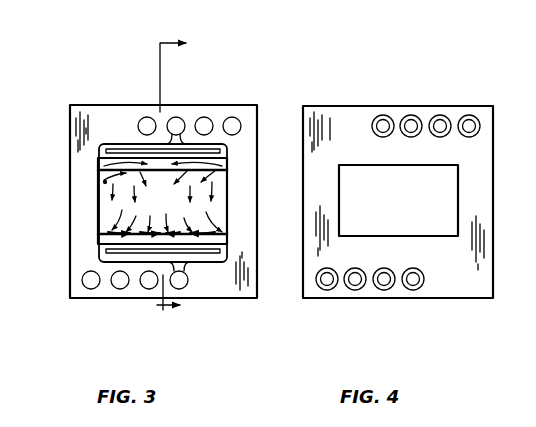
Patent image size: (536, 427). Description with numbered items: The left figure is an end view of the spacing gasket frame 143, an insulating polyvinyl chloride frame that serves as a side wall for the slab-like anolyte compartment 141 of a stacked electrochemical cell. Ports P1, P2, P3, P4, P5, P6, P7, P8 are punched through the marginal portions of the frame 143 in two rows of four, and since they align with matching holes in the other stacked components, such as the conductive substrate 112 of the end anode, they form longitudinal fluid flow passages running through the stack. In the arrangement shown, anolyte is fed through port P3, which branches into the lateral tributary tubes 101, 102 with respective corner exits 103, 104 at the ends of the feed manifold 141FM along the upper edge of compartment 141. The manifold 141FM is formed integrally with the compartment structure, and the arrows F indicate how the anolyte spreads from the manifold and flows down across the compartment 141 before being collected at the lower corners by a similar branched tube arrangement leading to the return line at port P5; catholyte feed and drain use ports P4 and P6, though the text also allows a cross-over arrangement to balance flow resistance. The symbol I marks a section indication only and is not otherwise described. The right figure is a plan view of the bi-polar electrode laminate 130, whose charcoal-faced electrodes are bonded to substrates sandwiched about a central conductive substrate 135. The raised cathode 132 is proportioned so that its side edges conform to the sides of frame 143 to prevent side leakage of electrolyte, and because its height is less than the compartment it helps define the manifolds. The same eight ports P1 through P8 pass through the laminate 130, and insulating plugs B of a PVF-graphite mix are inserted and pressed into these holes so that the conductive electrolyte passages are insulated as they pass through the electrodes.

In FIG. 3, the spacing gasket frame 143 is at (72, 150).
In FIG. 3, the tributary tube 101 is at (121, 145).
In FIG. 3, the tributary tube 102 is at (203, 147).
In FIG. 3, the upper corner 104 is at (227, 173).
In FIG. 3, the anolyte compartment 141 is at (182, 208).
In FIG. 3, the feed manifold 141FM is at (150, 157).
In FIG. 3, the upper corner 103 is at (105, 182).
In FIG. 3, the conductive substrate 112 is at (110, 188).
In FIG. 3, the flow pattern arrows F is at (112, 208).
In FIG. 3, the current I is at (171, 172).
In FIG. 3, the port P1 is at (233, 117).
In FIG. 4, the port P1 is at (470, 116).
In FIG. 3, the port P2 is at (205, 117).
In FIG. 4, the port P2 is at (441, 116).
In FIG. 3, the anolyte feed line port P3 is at (177, 117).
In FIG. 4, the anolyte feed line port P3 is at (412, 116).
In FIG. 3, the catholyte feed port P4 is at (147, 117).
In FIG. 4, the catholyte feed port P4 is at (384, 116).
In FIG. 3, the anolyte return line port P5 is at (181, 290).
In FIG. 4, the anolyte return line port P5 is at (415, 291).
In FIG. 3, the catholyte drain port P6 is at (149, 290).
In FIG. 4, the catholyte drain port P6 is at (385, 291).
In FIG. 3, the port P7 is at (120, 290).
In FIG. 4, the port P7 is at (355, 291).
In FIG. 3, the port P8 is at (91, 290).
In FIG. 4, the port P8 is at (327, 291).
In FIG. 4, the bi-polar electrode laminate 130 is at (365, 95).
In FIG. 4, the central conductive substrate 135 is at (331, 116).
In FIG. 4, the charcoal face (cathode) 132 is at (417, 214).
In FIG. 4, the plug B is at (466, 138).